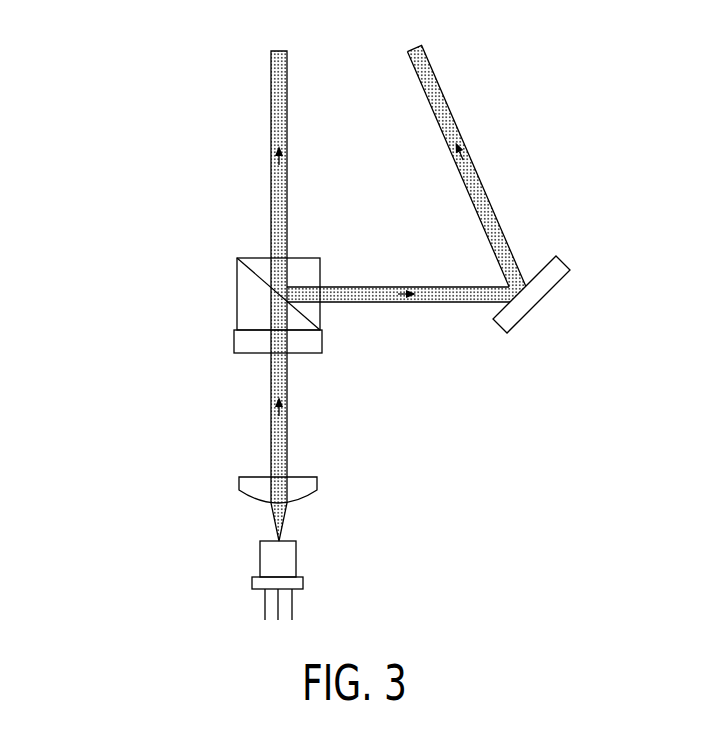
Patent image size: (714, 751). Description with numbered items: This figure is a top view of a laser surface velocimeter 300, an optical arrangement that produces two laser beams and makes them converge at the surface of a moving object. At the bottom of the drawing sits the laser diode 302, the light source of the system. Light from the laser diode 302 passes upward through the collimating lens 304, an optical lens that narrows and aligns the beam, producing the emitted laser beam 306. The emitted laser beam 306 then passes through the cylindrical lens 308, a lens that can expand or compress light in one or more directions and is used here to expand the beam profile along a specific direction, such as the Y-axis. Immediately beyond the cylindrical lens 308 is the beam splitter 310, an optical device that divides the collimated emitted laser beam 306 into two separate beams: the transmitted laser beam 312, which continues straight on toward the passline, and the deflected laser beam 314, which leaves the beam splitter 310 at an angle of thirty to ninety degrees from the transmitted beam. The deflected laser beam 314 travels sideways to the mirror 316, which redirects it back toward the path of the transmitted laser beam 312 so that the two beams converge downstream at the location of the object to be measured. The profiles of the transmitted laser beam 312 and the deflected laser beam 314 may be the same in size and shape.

The laser surface velocimeter 300 is at (105, 72).
The laser diode 302 is at (298, 567).
The collimating lens 304 is at (317, 488).
The emitted laser beam 306 is at (288, 427).
The cylindrical lens 308 is at (317, 340).
The beam splitter 310 is at (310, 273).
The transmitted laser beam 312 is at (271, 145).
The deflected laser beam 314 is at (472, 160).
The mirror 316 is at (555, 273).